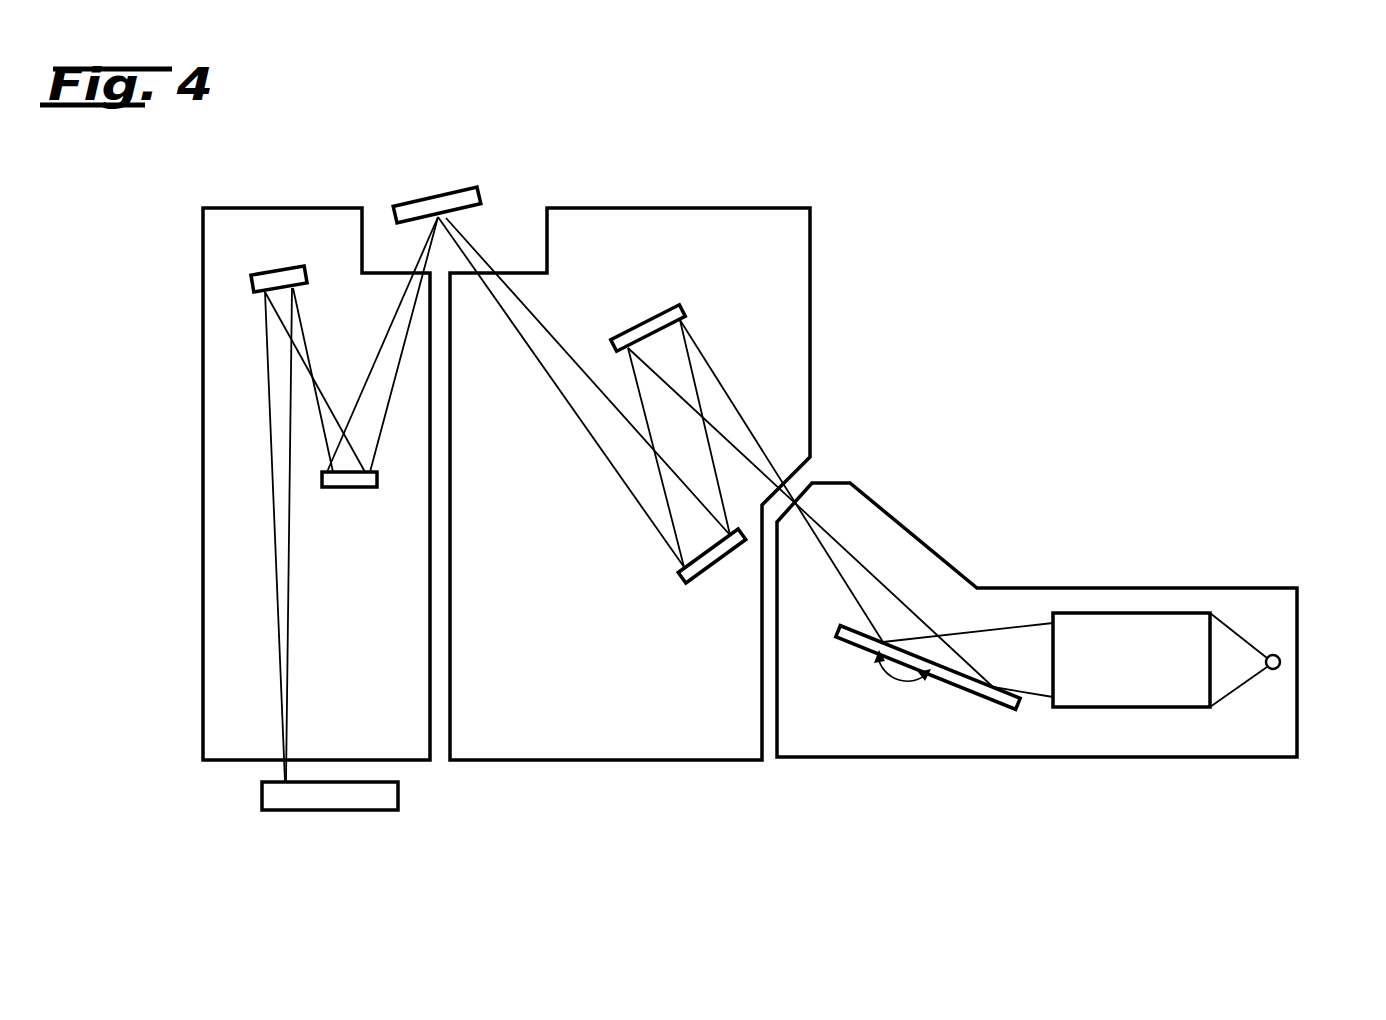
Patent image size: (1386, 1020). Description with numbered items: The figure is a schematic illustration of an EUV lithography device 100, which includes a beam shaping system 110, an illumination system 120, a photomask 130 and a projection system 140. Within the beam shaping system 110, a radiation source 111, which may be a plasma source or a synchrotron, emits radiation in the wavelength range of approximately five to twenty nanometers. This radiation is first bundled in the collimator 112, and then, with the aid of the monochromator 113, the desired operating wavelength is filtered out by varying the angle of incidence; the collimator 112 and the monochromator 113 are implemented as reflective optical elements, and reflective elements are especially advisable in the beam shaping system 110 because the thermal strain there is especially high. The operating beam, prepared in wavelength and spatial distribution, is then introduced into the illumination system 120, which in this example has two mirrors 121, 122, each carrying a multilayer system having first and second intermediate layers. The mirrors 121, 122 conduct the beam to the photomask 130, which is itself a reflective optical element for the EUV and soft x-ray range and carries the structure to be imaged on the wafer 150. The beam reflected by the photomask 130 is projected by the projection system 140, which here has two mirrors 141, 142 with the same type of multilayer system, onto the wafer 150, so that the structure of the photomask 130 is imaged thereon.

The EUV lithography device 100 is at (1132, 257).
The beam shaping system 110 is at (1095, 762).
The radiation source 111 is at (1280, 659).
The collimator 112 is at (1140, 632).
The monochromator 113 is at (948, 686).
The illumination system 120 is at (591, 766).
The mirror 121 is at (656, 322).
The mirror 122 is at (713, 565).
The photomask 130 is at (456, 200).
The projection system 140 is at (198, 512).
The mirror 141 is at (348, 487).
The mirror 142 is at (287, 276).
The wafer 150 is at (337, 796).